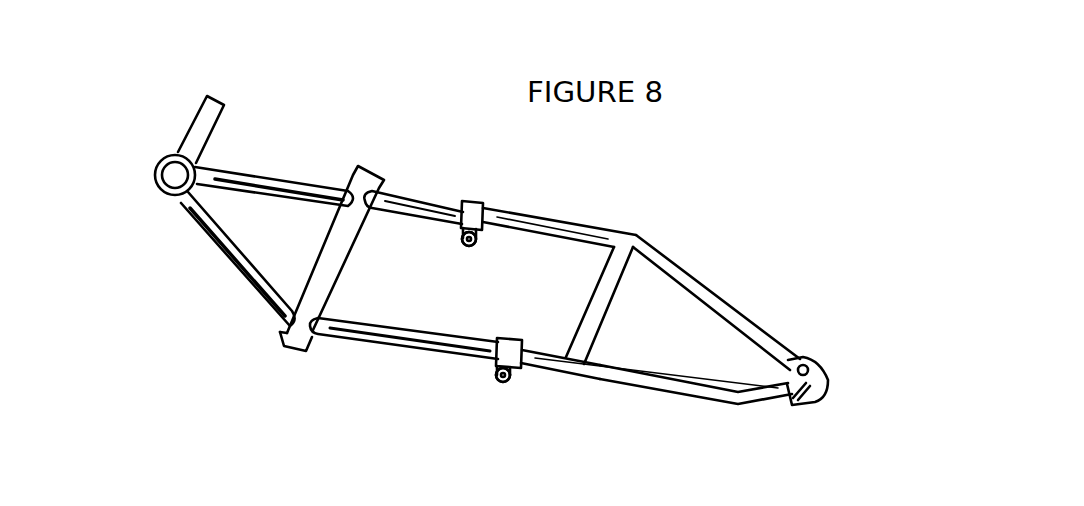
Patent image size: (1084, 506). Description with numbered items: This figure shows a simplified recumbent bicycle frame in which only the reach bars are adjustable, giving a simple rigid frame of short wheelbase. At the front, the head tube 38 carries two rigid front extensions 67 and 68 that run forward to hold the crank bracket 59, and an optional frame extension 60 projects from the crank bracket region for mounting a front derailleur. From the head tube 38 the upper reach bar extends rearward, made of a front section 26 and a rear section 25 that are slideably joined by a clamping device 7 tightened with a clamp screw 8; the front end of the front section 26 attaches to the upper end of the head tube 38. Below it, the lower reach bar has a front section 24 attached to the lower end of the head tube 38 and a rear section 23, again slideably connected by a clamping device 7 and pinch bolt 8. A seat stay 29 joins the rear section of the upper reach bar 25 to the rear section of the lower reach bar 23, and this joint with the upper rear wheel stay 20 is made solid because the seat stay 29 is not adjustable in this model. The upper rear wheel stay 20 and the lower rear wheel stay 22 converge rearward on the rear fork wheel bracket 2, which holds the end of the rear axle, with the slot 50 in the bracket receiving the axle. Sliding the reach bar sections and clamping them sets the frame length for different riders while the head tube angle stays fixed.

The rear fork wheel bracket 2 is at (812, 375).
The clamping device 7 is at (475, 200).
The clamp screw 8 is at (473, 243).
The upper rear wheel stay 20 is at (708, 295).
The lower rear wheel stay 22 is at (668, 388).
The rear section of lower reach bar 23 is at (547, 362).
The front section of lower reach bar 24 is at (420, 340).
The rear section of upper reach bar 25 is at (528, 223).
The front section of upper reach bar 26 is at (395, 198).
The seat stay 29 is at (605, 318).
The head tube 38 is at (330, 265).
The dropout slot 50 is at (793, 398).
The crank bracket 59 is at (172, 153).
The frame extension 60 is at (205, 117).
The rigid front extension 67 is at (287, 183).
The rigid front extension 68 is at (265, 283).